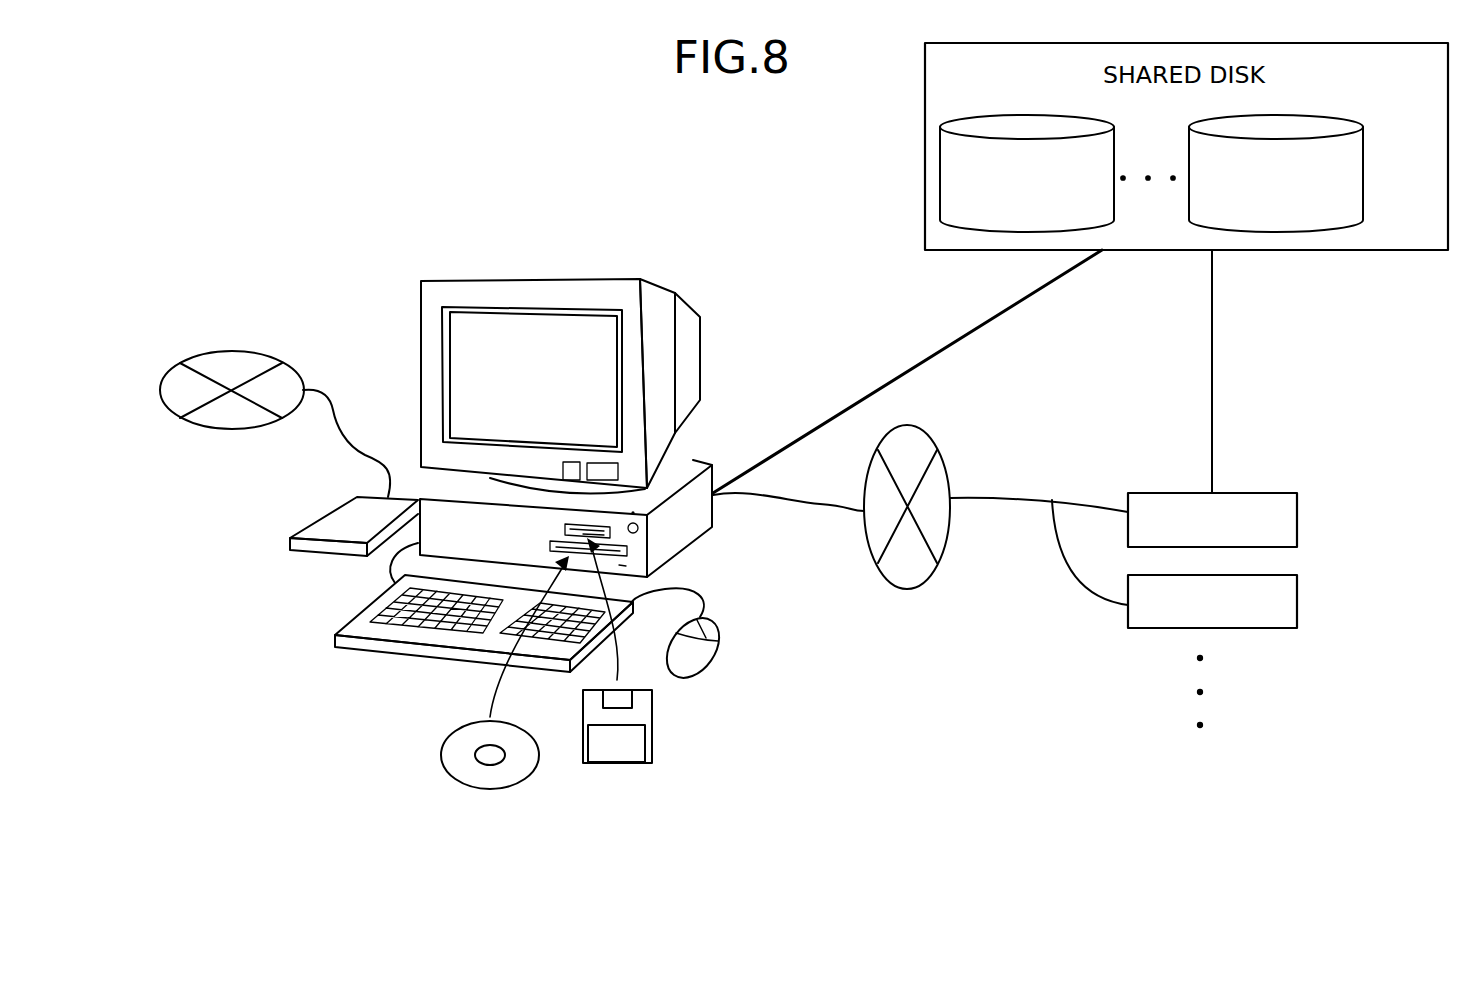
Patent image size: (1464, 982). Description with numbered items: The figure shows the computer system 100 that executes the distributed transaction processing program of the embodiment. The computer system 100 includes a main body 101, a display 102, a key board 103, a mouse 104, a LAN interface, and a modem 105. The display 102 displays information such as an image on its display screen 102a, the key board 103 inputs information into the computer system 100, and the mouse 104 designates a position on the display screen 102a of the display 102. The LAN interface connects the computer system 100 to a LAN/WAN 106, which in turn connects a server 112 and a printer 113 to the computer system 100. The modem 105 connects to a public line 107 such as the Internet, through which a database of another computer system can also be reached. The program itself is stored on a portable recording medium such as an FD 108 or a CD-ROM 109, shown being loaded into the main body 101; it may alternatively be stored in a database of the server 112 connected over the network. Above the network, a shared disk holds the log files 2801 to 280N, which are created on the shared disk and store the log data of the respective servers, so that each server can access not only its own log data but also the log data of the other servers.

The computer system 100 is at (608, 214).
The main body 101 is at (700, 450).
The display 102 is at (669, 303).
The display screen 102a is at (533, 332).
The key board 103 is at (363, 620).
The mouse 104 is at (695, 655).
The modem 105 is at (343, 522).
The LAN/WAN 106 is at (913, 588).
The public line 107 is at (203, 428).
The FD 108 is at (618, 765).
The CD-ROM 109 is at (437, 755).
The server 112 is at (1297, 518).
The printer 113 is at (1297, 600).
The log file 2801 is at (1115, 208).
The log file 280N is at (1363, 208).